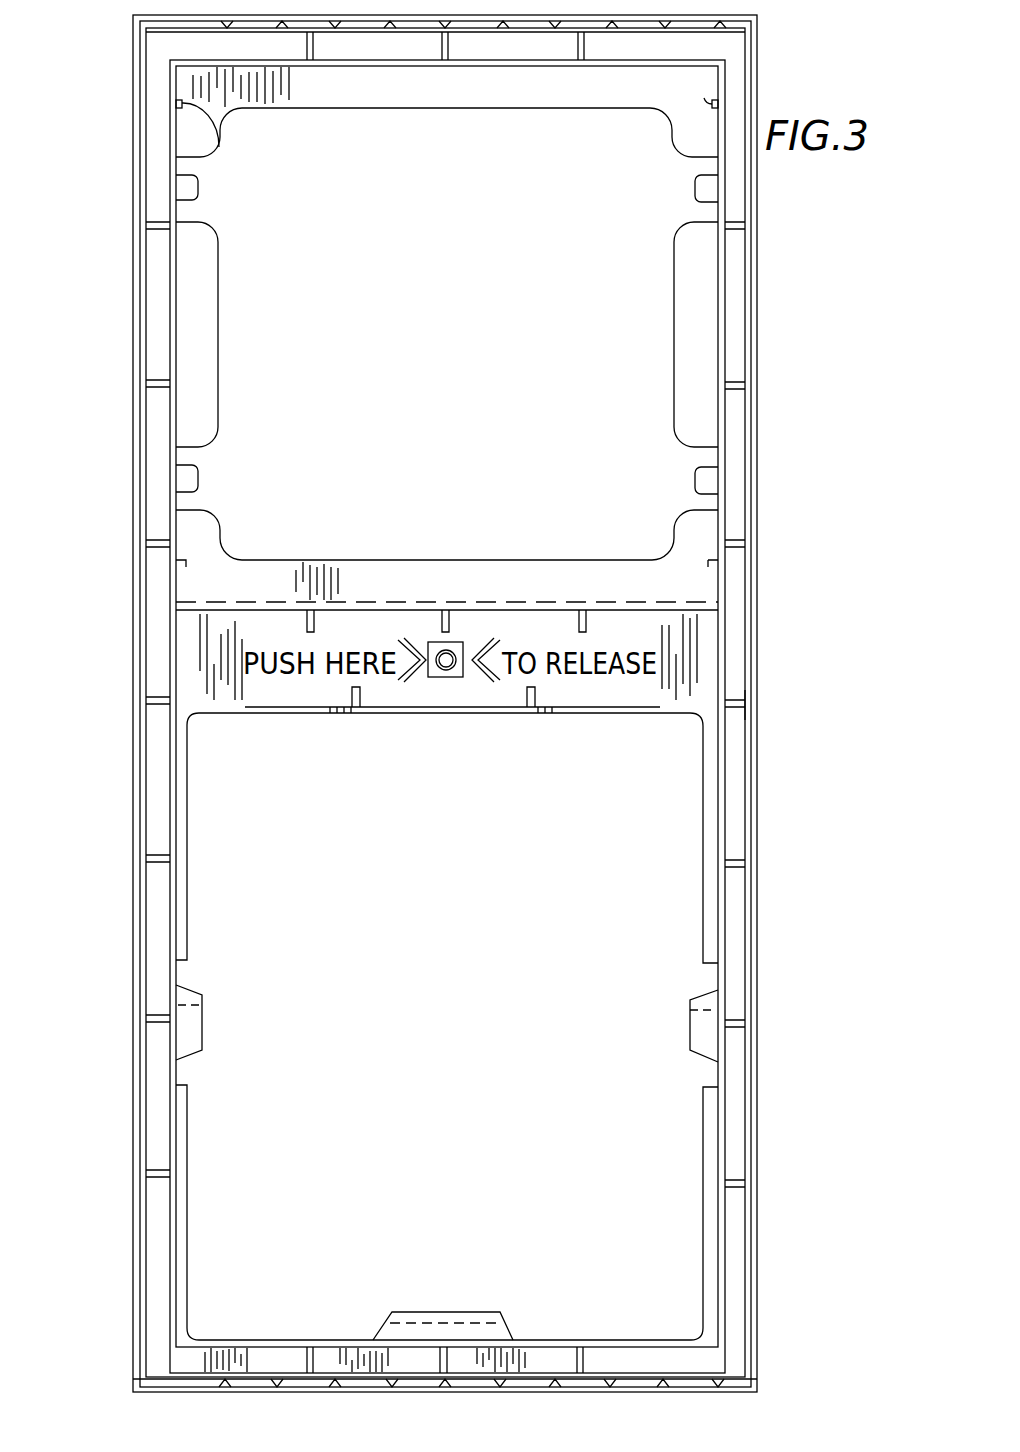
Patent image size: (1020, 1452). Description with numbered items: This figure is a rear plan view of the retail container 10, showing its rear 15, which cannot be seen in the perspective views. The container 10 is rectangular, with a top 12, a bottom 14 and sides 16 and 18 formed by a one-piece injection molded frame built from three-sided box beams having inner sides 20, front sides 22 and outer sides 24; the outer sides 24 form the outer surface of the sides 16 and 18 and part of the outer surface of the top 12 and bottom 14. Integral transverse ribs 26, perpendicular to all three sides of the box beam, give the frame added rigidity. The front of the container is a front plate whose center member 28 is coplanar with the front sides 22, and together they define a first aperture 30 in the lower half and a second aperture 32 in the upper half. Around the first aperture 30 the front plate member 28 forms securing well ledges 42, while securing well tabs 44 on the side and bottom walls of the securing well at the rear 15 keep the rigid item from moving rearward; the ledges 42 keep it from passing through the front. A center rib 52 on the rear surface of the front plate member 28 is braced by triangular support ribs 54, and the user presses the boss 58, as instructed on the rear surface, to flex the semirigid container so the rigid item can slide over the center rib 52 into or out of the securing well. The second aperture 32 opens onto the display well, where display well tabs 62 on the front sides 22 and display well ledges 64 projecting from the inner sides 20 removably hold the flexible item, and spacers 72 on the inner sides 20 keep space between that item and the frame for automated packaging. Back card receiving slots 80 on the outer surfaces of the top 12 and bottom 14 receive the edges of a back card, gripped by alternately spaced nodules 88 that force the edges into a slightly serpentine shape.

The retail container 10 is at (779, 1003).
The top 12 is at (441, 13).
The bottom 14 is at (731, 1393).
The rear 15 is at (705, 660).
The side 16 is at (126, 602).
The side 18 is at (758, 702).
The inner sides 20 is at (640, 70).
The front sides 22 is at (172, 115).
The outer sides 24 is at (170, 32).
The transverse ribs 26 is at (450, 45).
The front plate center member 28 is at (692, 718).
The first aperture 30 is at (210, 1120).
The second aperture 32 is at (230, 282).
The securing well ledges 42 is at (187, 870).
The securing well tabs 44 is at (198, 1040).
The center rib 52 is at (442, 710).
The support ribs 54 is at (355, 702).
The boss 58 is at (445, 640).
The display well tabs 62 is at (198, 182).
The display well ledges 64 is at (358, 90).
The spacers 72 is at (200, 140).
The back card receiving slots 80 is at (312, 30).
The nodules 88 is at (628, 24).